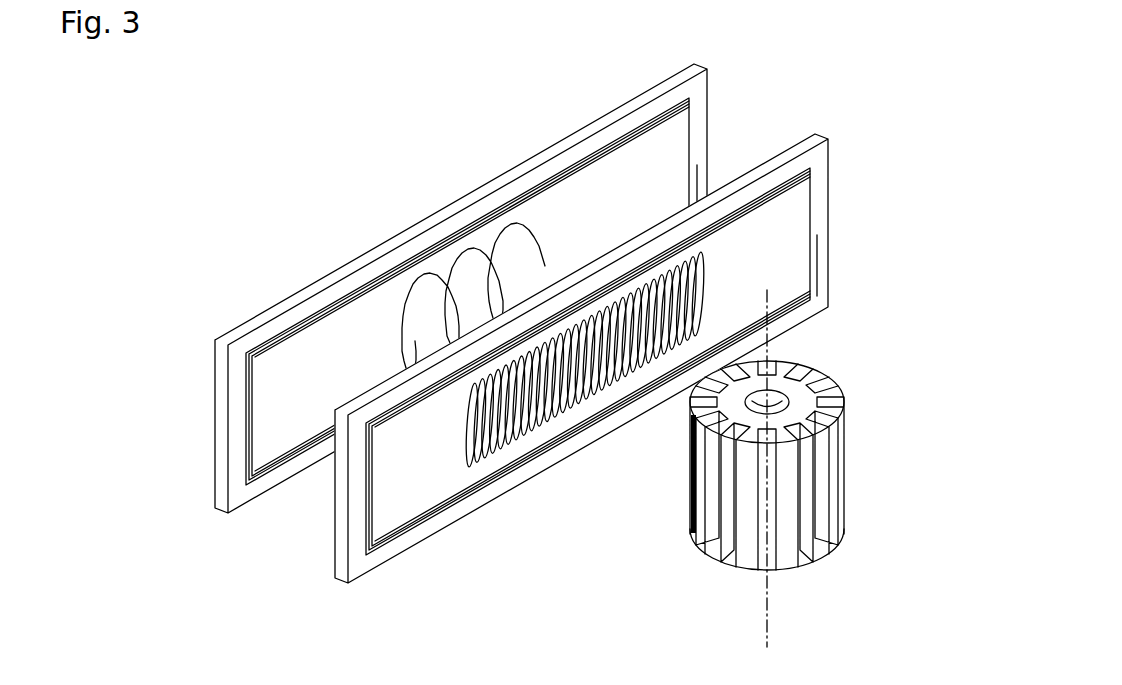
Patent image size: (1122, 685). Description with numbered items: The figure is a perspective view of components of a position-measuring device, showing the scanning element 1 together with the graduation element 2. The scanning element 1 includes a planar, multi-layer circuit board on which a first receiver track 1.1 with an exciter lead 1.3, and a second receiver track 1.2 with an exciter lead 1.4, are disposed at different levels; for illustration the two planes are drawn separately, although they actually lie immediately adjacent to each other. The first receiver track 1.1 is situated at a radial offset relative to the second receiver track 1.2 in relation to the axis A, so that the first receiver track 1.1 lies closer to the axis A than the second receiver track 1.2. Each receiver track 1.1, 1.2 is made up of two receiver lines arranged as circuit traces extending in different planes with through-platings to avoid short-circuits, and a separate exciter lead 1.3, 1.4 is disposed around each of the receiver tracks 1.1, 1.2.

The scanning element 1 is at (406, 172).
The first receiver track 1.1 is at (466, 457).
The second receiver track 1.2 is at (381, 318).
The exciter lead 1.3 is at (552, 442).
The exciter lead 1.4 is at (562, 176).
The graduation element 2 is at (703, 522).
The axis A is at (768, 615).